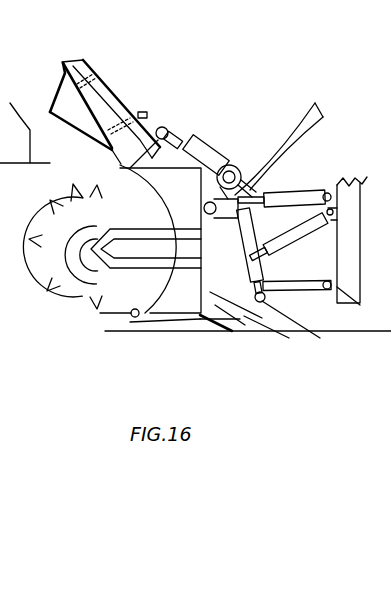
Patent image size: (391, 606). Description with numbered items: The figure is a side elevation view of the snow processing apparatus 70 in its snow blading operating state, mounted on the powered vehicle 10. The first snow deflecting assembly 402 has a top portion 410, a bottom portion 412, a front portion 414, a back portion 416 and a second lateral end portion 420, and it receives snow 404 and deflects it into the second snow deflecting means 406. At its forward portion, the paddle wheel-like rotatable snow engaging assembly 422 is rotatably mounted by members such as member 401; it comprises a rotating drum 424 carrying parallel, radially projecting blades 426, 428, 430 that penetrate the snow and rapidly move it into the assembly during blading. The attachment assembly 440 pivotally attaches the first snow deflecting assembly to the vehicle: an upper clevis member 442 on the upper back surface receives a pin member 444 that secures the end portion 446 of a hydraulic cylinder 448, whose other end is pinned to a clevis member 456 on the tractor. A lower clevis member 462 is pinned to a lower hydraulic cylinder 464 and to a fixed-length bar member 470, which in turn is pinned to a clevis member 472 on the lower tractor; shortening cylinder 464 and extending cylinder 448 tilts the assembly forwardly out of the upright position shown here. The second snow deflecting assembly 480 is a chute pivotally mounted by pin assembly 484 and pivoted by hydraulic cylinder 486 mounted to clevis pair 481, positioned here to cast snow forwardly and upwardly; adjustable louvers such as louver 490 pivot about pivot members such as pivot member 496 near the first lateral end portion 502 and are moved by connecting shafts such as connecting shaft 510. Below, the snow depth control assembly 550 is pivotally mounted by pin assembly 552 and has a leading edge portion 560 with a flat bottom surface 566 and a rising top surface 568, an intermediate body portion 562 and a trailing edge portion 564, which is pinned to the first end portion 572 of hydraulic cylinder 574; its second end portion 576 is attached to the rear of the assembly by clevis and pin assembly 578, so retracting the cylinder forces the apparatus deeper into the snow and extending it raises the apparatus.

The powered vehicle 10 is at (375, 172).
The snow processing apparatus 70 is at (296, 83).
The mounting member 401 is at (20, 212).
The first snow deflecting assembly 402 is at (258, 152).
The snow 404 is at (112, 322).
The second snow deflecting means 406 is at (0, 75).
The top portion 410 is at (168, 147).
The bottom portion 412 is at (183, 318).
The front portion 414 is at (96, 228).
The back portion 416 is at (195, 264).
The second lateral end portion 420 is at (150, 241).
The rotatable snow engaging assembly 422 is at (32, 227).
The rotating drum 424 is at (110, 170).
The radially projecting blade 426 is at (63, 62).
The radially projecting blade 428 is at (28, 243).
The radially projecting blade 430 is at (41, 258).
The attachment assembly 440 is at (290, 313).
The upper clevis member 442 is at (307, 108).
The pin member 444 is at (209, 215).
The cylinder end portion 446 is at (319, 121).
The hydraulic cylinder 448 is at (310, 190).
The clevis member 456 is at (331, 178).
The lower clevis member 462 is at (313, 226).
The hydraulic cylinder 464 is at (284, 257).
The fixed-length bar member 470 is at (285, 288).
The clevis member 472 is at (357, 303).
The second snow deflecting assembly 480 is at (113, 82).
The clevis pair 481 is at (166, 120).
The pin assembly 484 is at (108, 150).
The hydraulic cylinder 486 is at (231, 112).
The adjustable louver 490 is at (50, 87).
The pivot member 496 is at (115, 68).
The first lateral end portion 502 is at (25, 122).
The connecting shaft 510 is at (138, 115).
The snow depth control assembly 550 is at (168, 322).
The pin assembly 552 is at (117, 332).
The leading edge portion 560 is at (110, 335).
The intermediate body portion 562 is at (243, 332).
The trailing edge portion 564 is at (253, 333).
The flat bottom surface 566 is at (123, 333).
The top surface 568 is at (107, 298).
The first end portion 572 is at (272, 308).
The hydraulic cylinder 574 is at (256, 208).
The second end portion 576 is at (236, 172).
The clevis and pin assembly 578 is at (208, 151).